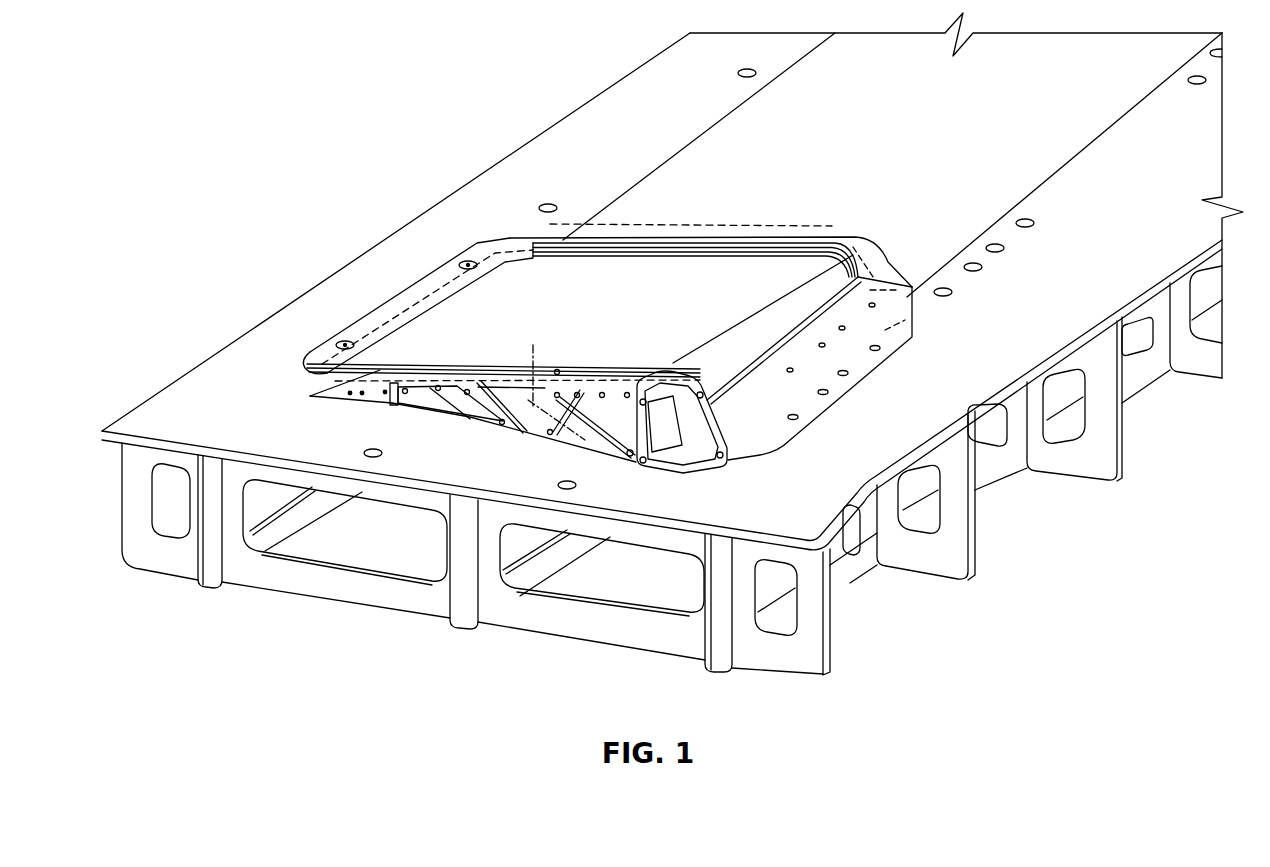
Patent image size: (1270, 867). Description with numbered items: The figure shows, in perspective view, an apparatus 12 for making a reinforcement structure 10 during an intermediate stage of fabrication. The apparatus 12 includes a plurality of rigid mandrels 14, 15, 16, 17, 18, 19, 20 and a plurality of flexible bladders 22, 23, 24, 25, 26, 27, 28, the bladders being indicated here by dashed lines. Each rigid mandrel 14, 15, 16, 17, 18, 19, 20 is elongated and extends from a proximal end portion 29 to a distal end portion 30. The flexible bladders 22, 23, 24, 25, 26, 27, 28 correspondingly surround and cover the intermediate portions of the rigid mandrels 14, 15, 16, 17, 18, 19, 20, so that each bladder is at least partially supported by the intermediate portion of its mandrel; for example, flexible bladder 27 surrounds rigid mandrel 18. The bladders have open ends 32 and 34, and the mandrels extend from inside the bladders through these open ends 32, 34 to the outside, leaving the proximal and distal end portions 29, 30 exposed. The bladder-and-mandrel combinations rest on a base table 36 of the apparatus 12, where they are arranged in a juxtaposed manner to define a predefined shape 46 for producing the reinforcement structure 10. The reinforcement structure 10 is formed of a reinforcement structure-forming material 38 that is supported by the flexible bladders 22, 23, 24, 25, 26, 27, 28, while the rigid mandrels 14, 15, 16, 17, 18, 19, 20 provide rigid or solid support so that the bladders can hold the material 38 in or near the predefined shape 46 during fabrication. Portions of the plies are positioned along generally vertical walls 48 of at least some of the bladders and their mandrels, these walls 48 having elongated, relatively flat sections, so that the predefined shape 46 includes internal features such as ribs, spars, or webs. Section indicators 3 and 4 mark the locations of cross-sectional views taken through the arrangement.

The section line 3- 3 is at (577, 433).
The section line 4- 4 is at (520, 402).
The reinforcement structure 10 is at (457, 312).
The apparatus 12 is at (284, 101).
The rigid mandrel 14 is at (350, 401).
The rigid mandrel 15 is at (394, 400).
The rigid mandrel 16 is at (470, 405).
The rigid mandrel 17 is at (503, 431).
The rigid mandrel 18 is at (613, 452).
The rigid mandrel 19 is at (662, 380).
The rigid mandrel 20 is at (708, 450).
The flexible bladder 22 is at (578, 241).
The flexible bladder 23 is at (597, 243).
The flexible bladder 24 is at (688, 242).
The flexible bladder 25 is at (735, 245).
The flexible bladder 26 is at (785, 246).
The flexible bladder 27 is at (843, 252).
The flexible bladder 28 is at (690, 417).
The proximal end portion 29 is at (587, 440).
The distal end portion 30 is at (872, 241).
The open end 32 is at (704, 455).
The open end 34 is at (812, 249).
The base table 36 is at (878, 452).
The reinforcement structure-forming material 38 is at (550, 280).
The predefined shape 46 is at (503, 272).
The generally vertical wall 48 is at (557, 368).